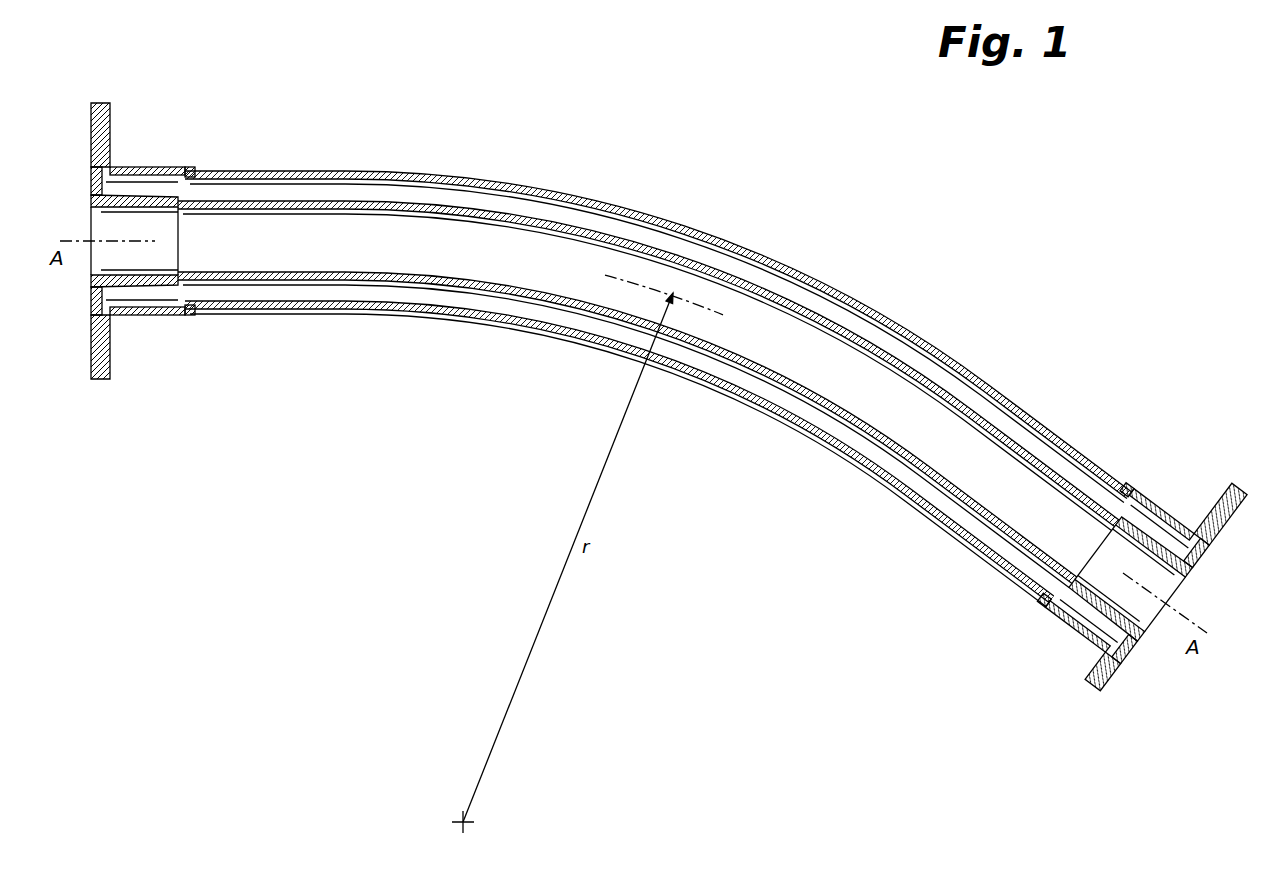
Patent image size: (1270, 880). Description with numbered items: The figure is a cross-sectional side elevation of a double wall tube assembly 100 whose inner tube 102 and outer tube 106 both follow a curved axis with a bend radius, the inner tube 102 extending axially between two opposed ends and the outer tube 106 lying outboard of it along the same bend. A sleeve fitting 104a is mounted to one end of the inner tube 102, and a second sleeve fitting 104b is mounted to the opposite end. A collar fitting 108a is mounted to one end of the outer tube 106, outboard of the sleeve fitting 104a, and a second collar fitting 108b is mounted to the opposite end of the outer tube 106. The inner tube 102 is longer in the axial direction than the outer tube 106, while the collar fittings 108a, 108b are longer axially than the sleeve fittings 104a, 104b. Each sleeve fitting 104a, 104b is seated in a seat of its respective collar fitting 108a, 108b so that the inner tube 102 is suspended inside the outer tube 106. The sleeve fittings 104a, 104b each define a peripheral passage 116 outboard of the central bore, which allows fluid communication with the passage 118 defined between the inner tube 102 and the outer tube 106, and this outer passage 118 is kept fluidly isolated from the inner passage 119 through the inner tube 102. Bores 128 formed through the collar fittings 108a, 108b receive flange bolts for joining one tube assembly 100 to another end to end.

The double wall tube assembly 100 is at (655, 360).
The inner tube 102 is at (478, 207).
The outer tube 106 is at (388, 173).
The sleeve fitting 104a is at (108, 226).
The second sleeve fitting 104b is at (1135, 615).
The collar fitting 108a is at (100, 103).
The second collar fitting 108b is at (1222, 500).
The peripheral passage 116 is at (92, 187).
The bore 128 is at (117, 118).
The passage 118 is at (502, 297).
The inner passage 119 is at (393, 245).